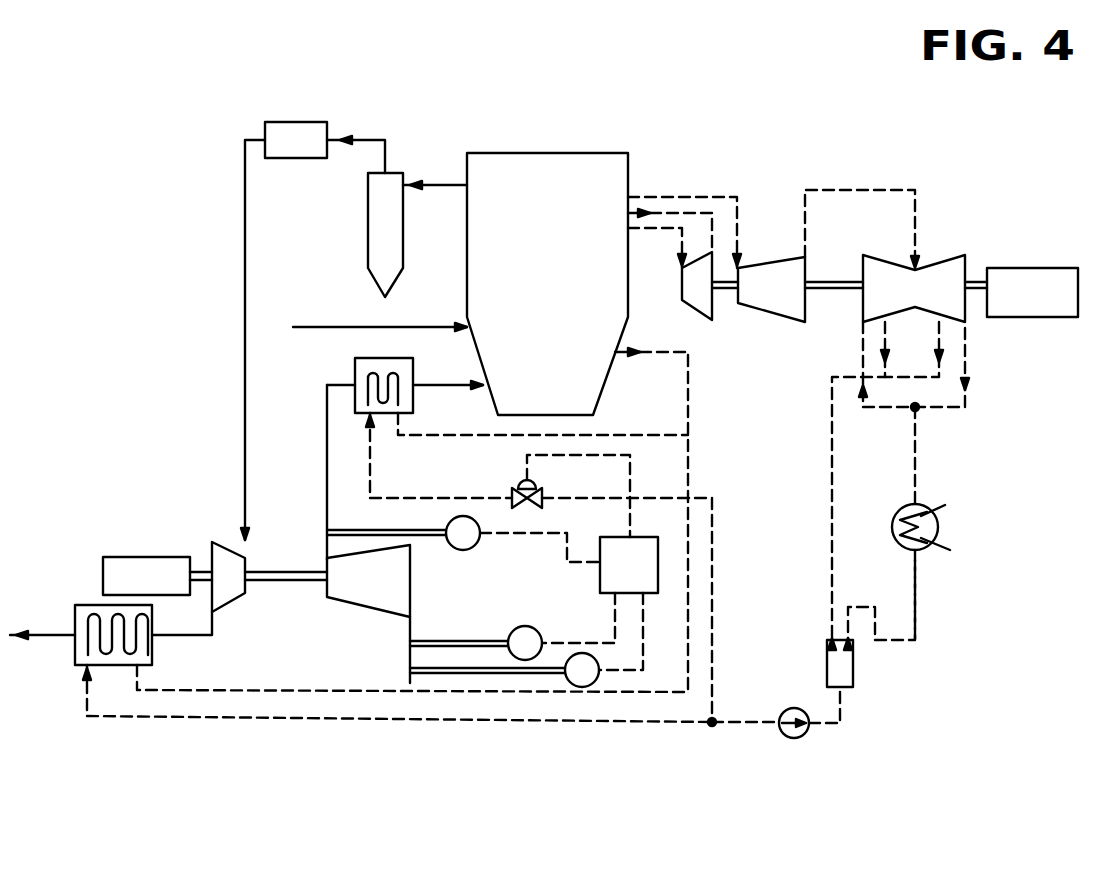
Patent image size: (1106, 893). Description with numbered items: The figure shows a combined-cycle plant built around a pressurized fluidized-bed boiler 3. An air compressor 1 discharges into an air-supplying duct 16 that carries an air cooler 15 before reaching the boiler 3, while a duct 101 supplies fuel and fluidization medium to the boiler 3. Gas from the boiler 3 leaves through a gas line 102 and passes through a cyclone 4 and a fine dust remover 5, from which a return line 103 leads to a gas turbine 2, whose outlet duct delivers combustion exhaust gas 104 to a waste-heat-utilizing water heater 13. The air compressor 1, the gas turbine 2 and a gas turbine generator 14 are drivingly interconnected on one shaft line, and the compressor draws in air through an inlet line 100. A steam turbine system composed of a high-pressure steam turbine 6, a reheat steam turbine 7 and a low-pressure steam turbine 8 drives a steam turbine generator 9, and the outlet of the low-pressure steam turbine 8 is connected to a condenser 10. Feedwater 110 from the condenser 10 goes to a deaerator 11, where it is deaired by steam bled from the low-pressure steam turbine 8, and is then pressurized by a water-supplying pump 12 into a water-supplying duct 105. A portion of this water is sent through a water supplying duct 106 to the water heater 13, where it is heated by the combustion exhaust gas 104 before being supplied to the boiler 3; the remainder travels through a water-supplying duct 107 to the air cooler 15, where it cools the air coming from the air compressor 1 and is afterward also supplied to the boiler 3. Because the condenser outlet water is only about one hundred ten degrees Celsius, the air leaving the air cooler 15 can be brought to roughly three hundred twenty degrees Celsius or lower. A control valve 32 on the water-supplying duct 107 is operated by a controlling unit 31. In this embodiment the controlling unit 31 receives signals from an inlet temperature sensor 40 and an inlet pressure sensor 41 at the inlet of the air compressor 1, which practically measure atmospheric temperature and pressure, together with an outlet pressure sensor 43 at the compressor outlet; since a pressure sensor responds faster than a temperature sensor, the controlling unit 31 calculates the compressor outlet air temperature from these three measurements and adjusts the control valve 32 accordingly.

The air compressor 1 is at (344, 600).
The gas turbine 2 is at (224, 542).
The pressurized fluidized-bed boiler 3 is at (612, 175).
The cyclone 4 is at (368, 208).
The fine dust remover 5 is at (297, 122).
The high-pressure steam turbine 6 is at (696, 308).
The reheat steam turbine 7 is at (774, 255).
The low-pressure steam turbine 8 is at (940, 255).
The steam turbine generator 9 is at (1030, 268).
The condenser 10 is at (935, 525).
The deaerator 11 is at (853, 675).
The water-supplying pump 12 is at (794, 738).
The waste-heat-utilizing water heater 13 is at (83, 603).
The gas turbine generator 14 is at (147, 557).
The air cooler 15 is at (355, 365).
The air-supplying duct 16 is at (325, 468).
The controlling unit 31 is at (600, 588).
The control valve 32 is at (514, 488).
The inlet temperature sensor 40 is at (596, 686).
The inlet pressure sensor 41 is at (518, 628).
The outlet pressure sensor 43 is at (463, 551).
The exhaust steam line 100 is at (409, 662).
The duct 101 is at (310, 327).
The combustion gas line 102 is at (430, 185).
The gas return line 103 is at (243, 385).
The combustion exhaust gas 104 is at (212, 628).
The water-supplying duct 105 is at (745, 720).
The water supplying duct 106 is at (587, 722).
The water-supplying duct 107 is at (713, 562).
The feedwater 110 is at (914, 592).